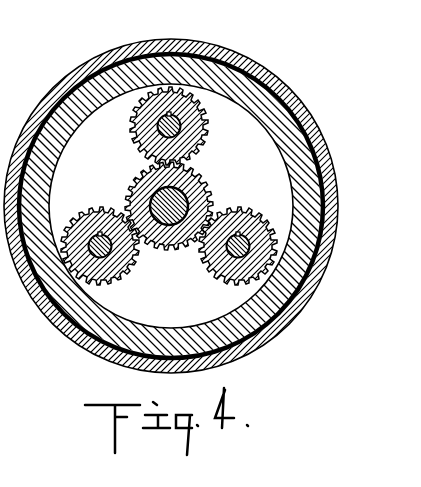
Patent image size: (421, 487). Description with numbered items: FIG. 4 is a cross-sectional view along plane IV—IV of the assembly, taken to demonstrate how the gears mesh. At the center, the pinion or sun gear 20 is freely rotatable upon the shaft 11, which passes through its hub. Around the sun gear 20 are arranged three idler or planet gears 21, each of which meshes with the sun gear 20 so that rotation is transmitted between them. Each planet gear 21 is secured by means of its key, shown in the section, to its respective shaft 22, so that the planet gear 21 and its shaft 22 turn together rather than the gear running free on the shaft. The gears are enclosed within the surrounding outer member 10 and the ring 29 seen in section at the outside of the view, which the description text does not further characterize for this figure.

The housing 10 is at (241, 56).
The ring gear liner 29 is at (190, 64).
The sun gear 20 is at (134, 192).
The shaft 11 is at (204, 188).
The planet gear 21 is at (133, 127).
The shaft 22 is at (180, 127).